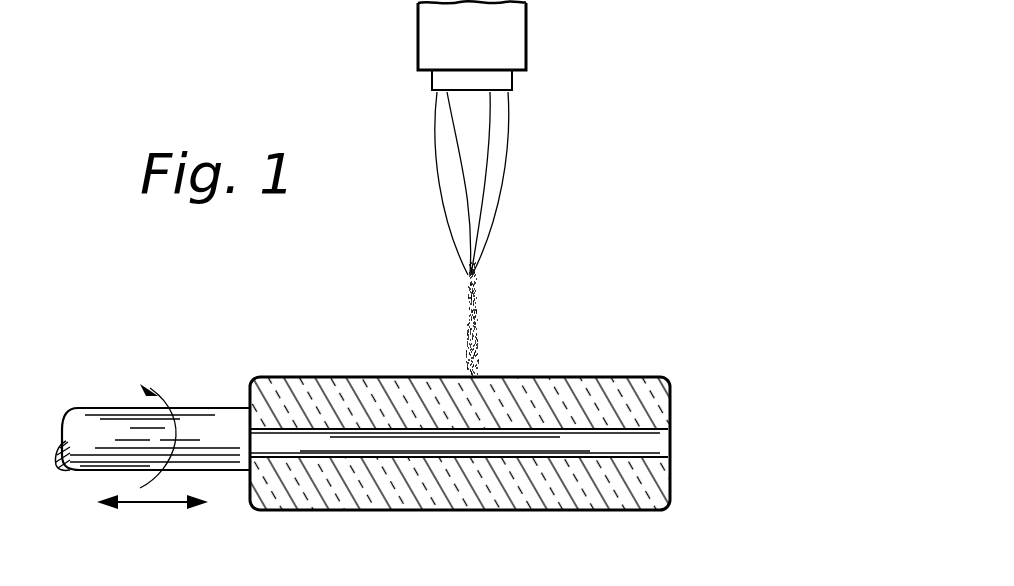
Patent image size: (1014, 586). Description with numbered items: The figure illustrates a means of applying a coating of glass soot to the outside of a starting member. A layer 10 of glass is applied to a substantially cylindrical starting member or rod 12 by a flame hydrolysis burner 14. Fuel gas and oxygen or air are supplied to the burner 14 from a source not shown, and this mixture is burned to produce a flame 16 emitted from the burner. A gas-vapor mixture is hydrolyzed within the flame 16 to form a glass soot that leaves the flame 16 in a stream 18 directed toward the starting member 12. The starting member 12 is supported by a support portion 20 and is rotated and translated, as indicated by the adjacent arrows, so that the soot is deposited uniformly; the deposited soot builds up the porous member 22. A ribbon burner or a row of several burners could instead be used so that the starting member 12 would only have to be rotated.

The layer of glass 10 is at (611, 388).
The starting member 12 is at (660, 447).
The flame hydrolysis burner 14 is at (512, 34).
The flame 16 is at (498, 150).
The stream 18 is at (473, 316).
The support portion 20 is at (95, 415).
The porous member 22 is at (308, 370).